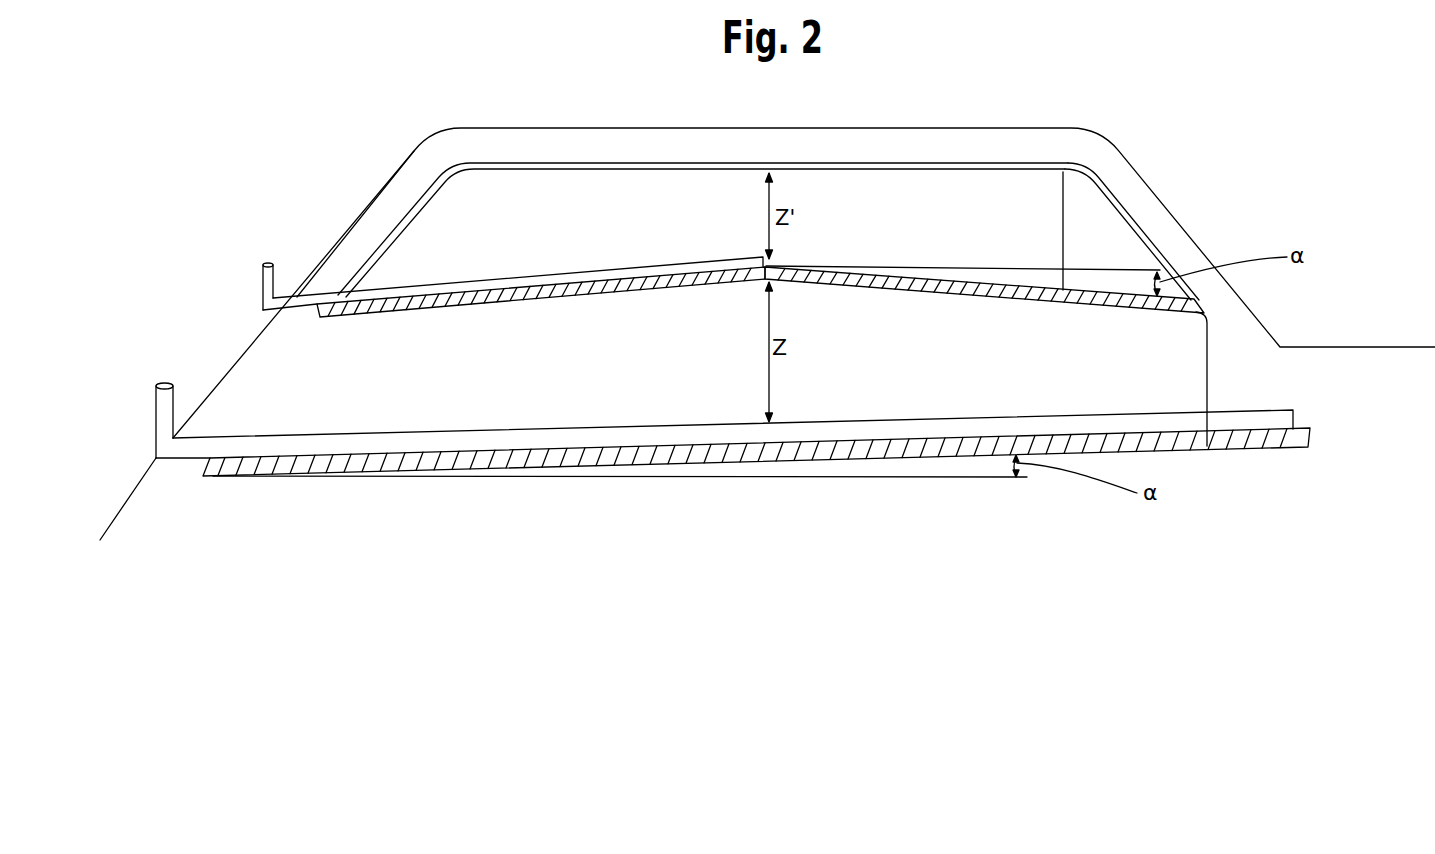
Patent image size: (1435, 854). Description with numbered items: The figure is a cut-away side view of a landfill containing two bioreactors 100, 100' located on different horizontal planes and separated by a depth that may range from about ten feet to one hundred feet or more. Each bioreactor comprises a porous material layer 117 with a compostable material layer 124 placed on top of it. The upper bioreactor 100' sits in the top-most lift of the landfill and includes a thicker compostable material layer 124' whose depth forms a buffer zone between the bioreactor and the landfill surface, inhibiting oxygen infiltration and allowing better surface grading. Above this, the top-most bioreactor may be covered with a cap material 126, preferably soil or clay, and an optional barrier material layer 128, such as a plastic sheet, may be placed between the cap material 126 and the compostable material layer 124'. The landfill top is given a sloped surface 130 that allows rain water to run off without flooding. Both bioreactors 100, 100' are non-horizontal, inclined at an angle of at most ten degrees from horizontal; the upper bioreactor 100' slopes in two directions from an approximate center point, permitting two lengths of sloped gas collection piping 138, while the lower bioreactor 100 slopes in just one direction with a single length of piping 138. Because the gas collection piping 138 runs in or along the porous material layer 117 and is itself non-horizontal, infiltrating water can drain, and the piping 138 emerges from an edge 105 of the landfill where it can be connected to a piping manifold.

The bioreactor 100 is at (1288, 379).
The bioreactor 100' is at (1151, 231).
The edge of the landfill 105 is at (385, 210).
The porous material layer 117 is at (347, 313).
The compostable material layer 124 is at (718, 396).
The compostable material layer 124' is at (513, 195).
The cap material 126 is at (962, 145).
The barrier material layer 128 is at (1090, 177).
The sloped surface 130 is at (866, 130).
The gas collection piping 138 is at (286, 297).